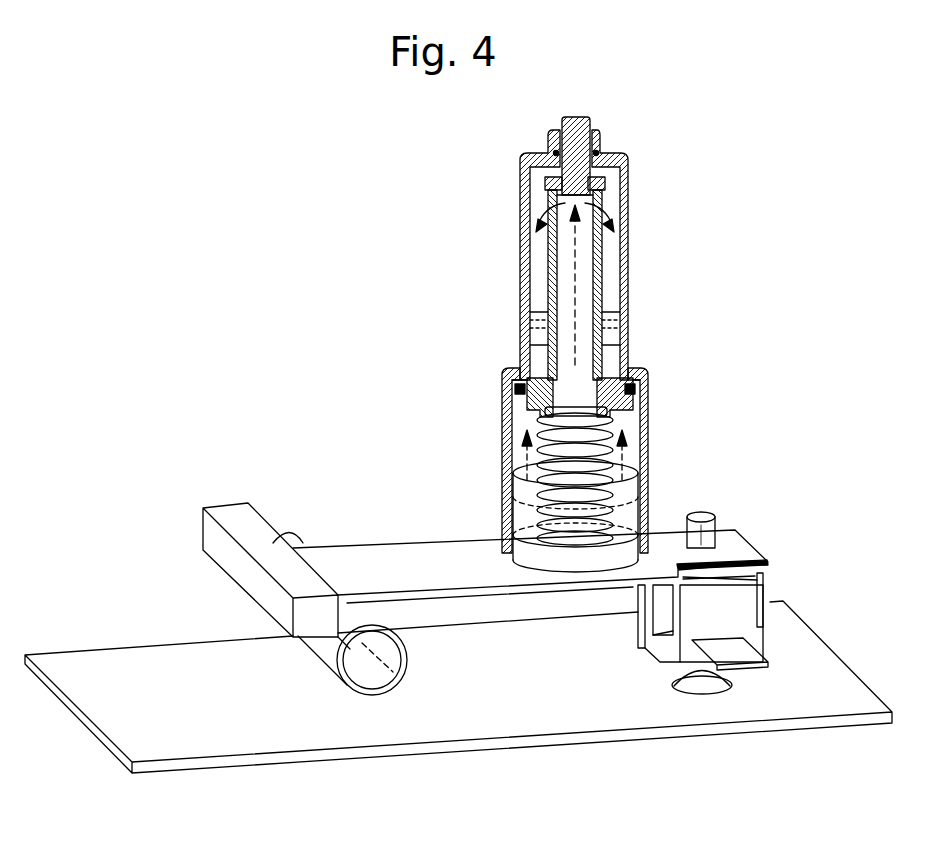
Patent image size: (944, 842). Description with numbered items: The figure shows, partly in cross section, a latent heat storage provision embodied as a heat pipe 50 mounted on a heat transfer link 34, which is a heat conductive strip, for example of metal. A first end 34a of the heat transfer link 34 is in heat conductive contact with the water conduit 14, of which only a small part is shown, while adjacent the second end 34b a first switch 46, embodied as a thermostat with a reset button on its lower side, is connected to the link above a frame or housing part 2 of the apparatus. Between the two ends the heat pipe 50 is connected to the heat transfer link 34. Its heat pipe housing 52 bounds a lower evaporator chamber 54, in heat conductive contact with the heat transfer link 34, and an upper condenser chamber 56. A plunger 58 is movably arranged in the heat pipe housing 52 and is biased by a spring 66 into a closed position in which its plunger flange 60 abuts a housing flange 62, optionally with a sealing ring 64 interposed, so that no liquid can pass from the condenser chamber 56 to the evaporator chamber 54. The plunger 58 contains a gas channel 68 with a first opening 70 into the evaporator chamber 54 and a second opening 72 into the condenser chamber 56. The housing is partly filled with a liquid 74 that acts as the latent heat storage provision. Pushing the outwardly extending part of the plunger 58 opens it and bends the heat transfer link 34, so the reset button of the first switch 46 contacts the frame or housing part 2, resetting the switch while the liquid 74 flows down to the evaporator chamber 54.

The frame or housing part 2 is at (128, 676).
The water conduit 14 is at (371, 676).
The heat transfer link 34 is at (400, 560).
The first end 34a is at (327, 557).
The second end 34b is at (737, 548).
The first switch 46 is at (735, 600).
The heat pipe 50 is at (679, 202).
The heat pipe housing 52 is at (628, 287).
The evaporator chamber 54 is at (623, 420).
The condenser chamber 56 is at (612, 254).
The plunger 58 is at (597, 343).
The plunger flange 60 is at (630, 400).
The housing flange 62 is at (630, 368).
The sealing ring 64 is at (517, 390).
The spring 66 is at (607, 460).
The gas channel 68 is at (565, 293).
The first opening 70 is at (575, 408).
The second opening 72 is at (553, 205).
The liquid 74 is at (538, 334).